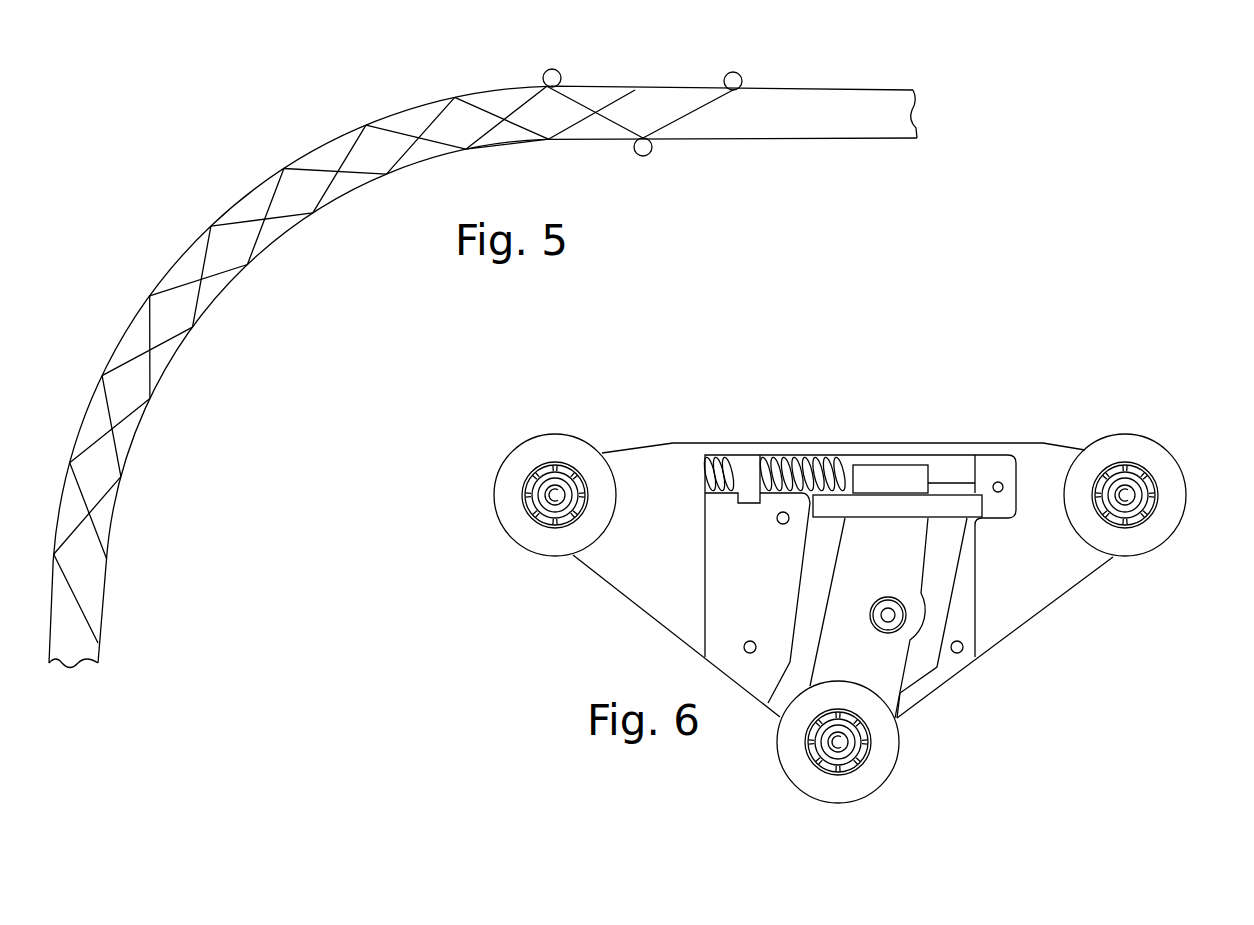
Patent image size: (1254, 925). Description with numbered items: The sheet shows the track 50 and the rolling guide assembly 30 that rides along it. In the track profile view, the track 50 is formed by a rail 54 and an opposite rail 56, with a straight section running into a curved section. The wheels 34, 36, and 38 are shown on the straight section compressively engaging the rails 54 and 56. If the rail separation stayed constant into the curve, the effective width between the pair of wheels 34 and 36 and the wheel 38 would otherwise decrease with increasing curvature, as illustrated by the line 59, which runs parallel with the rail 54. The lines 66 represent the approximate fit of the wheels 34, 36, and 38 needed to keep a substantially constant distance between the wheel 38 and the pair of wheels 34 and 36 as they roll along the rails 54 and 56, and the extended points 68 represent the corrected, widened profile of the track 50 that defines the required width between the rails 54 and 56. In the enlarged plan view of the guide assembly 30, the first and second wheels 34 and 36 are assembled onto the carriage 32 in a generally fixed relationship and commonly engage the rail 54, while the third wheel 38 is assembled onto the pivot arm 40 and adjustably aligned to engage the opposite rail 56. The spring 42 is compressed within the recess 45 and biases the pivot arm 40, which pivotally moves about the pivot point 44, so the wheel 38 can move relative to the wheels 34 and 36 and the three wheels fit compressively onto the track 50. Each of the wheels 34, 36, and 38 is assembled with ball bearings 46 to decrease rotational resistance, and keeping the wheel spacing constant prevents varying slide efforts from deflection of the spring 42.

In FIG. 6, the guide assembly 30 is at (707, 388).
In FIG. 6, the carriage 32 is at (662, 597).
In FIG. 5, the first wheel 34 is at (736, 73).
In FIG. 6, the first wheel 34 is at (1140, 447).
In FIG. 5, the second wheel 36 is at (551, 71).
In FIG. 6, the second wheel 36 is at (535, 450).
In FIG. 5, the third wheel 38 is at (643, 156).
In FIG. 6, the third wheel 38 is at (845, 793).
In FIG. 6, the pivot arm 40 is at (910, 480).
In FIG. 6, the spring 42 is at (790, 470).
In FIG. 6, the pivot point 44 is at (893, 620).
In FIG. 6, the recess 45 is at (860, 462).
In FIG. 6, the ball bearings 46 is at (527, 502).
In FIG. 5, the track 50 is at (360, 275).
In FIG. 5, the rail 54 is at (310, 138).
In FIG. 5, the rail 56 is at (352, 195).
In FIG. 5, the line 59 is at (423, 153).
In FIG. 5, the lines 66 is at (393, 120).
In FIG. 5, the extended points 68 is at (477, 137).